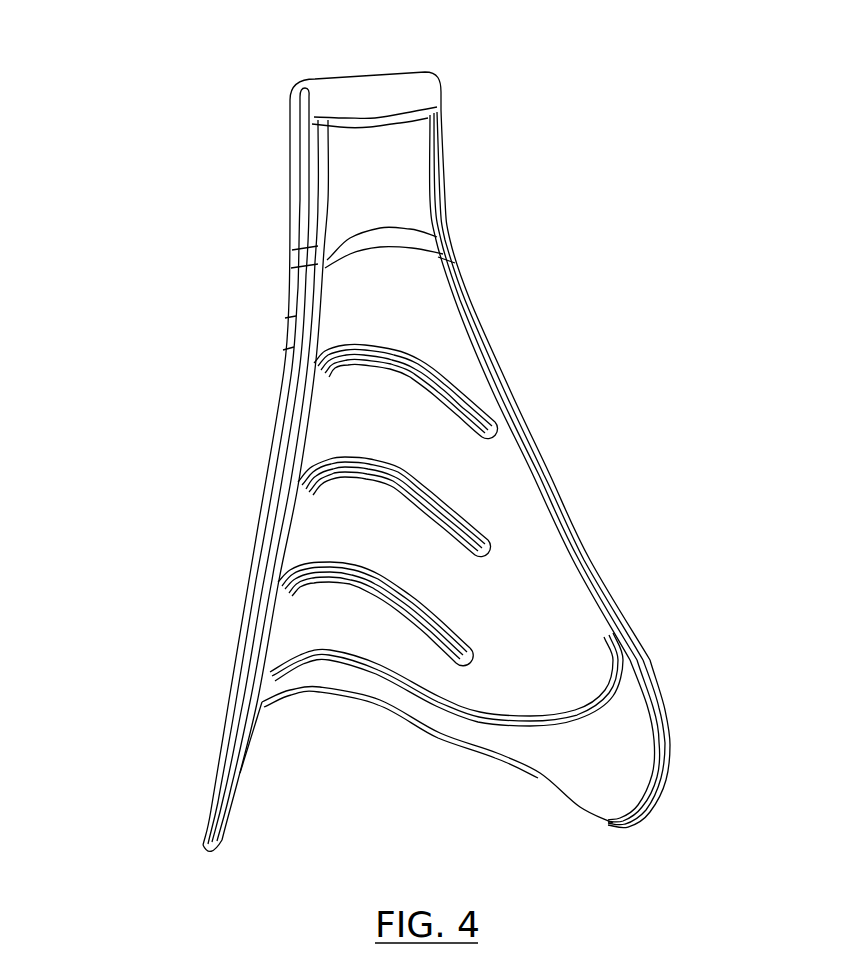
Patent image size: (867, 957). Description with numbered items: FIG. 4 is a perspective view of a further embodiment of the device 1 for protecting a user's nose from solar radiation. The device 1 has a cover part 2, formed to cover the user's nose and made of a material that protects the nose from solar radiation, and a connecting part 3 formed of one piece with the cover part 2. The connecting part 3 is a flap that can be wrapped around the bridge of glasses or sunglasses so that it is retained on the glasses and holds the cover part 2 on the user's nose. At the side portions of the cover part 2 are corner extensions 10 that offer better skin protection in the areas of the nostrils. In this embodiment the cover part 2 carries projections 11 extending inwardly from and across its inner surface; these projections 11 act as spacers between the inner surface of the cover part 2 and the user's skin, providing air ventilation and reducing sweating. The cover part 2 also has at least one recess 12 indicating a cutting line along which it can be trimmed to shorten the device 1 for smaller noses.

The device 1 is at (148, 90).
The cover part 2 is at (523, 252).
The connecting part 3 is at (355, 96).
The corner extensions 10 is at (637, 787).
The projections 11 is at (443, 620).
The recess 12 is at (530, 713).